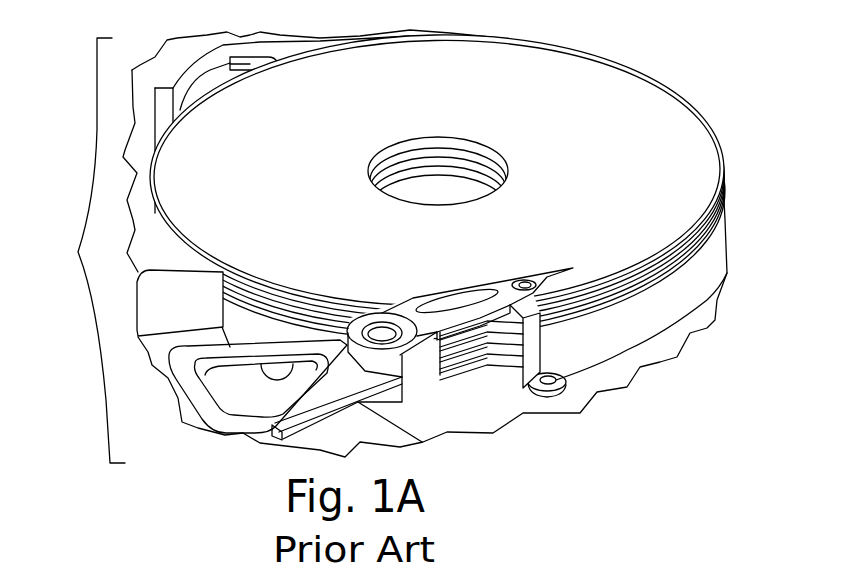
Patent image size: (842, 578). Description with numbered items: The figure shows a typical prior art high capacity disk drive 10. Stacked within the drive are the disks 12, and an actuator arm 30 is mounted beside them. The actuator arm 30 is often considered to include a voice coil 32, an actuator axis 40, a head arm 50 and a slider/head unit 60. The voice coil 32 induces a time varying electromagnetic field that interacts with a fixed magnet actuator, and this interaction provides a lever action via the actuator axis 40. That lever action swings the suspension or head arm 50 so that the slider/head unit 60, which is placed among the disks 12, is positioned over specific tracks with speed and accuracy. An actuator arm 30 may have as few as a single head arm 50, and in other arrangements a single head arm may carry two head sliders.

The disk drive 10 is at (385, 246).
The disks 12 is at (638, 99).
The actuator arm 30 is at (418, 382).
The voice coil 32 is at (245, 413).
The actuator axis 40 is at (380, 325).
The head arm 50 is at (487, 284).
The slider/head unit 60 is at (546, 272).